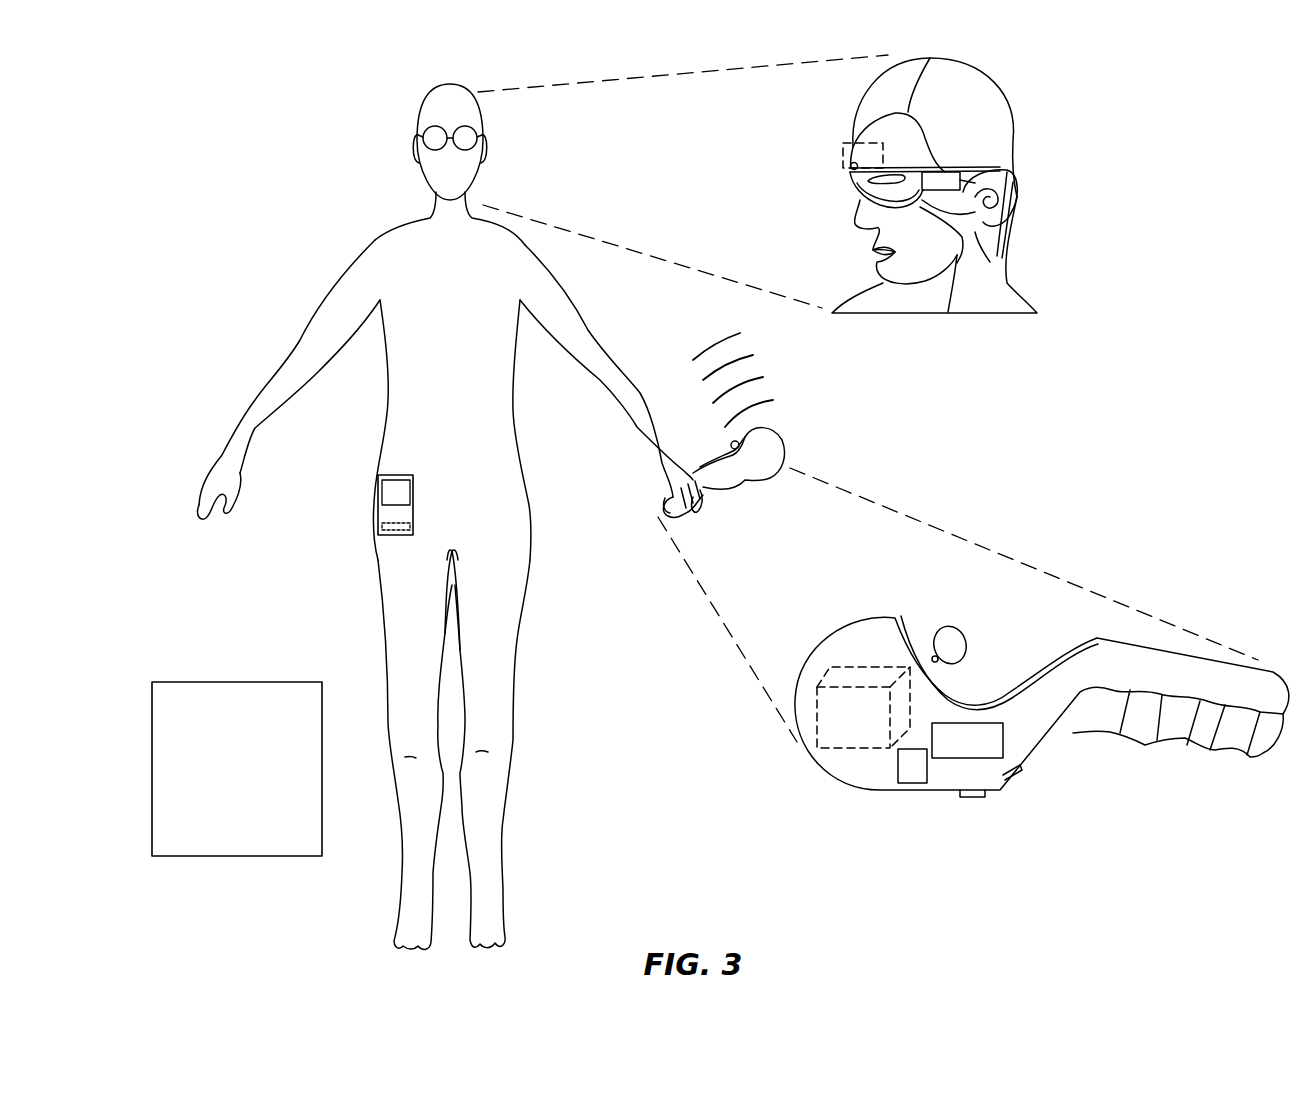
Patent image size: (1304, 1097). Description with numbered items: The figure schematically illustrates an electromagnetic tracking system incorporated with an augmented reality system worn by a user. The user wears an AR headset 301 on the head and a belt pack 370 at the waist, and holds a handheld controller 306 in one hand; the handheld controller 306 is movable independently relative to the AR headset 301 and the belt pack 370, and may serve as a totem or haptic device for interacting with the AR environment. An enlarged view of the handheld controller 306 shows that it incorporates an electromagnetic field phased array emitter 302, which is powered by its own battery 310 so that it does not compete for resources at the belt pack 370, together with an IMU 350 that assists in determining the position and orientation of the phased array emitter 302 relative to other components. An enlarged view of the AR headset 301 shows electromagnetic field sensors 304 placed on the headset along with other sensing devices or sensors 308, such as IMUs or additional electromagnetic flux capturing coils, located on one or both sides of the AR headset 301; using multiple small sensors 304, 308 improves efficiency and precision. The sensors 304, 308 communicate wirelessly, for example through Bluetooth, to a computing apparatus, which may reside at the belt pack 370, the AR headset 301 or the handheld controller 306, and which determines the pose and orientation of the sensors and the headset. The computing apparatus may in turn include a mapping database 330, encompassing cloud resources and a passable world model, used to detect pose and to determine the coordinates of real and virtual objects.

The AR headset 301 is at (395, 460).
The phased array emitter 302 is at (848, 750).
The electromagnetic field sensors 304 is at (332, 548).
The handheld controller 306 is at (790, 455).
The sensors 308 is at (980, 225).
The battery 310 is at (985, 758).
The mapping database 330 is at (392, 532).
The IMU 350 is at (915, 783).
The belt pack 370 is at (380, 500).